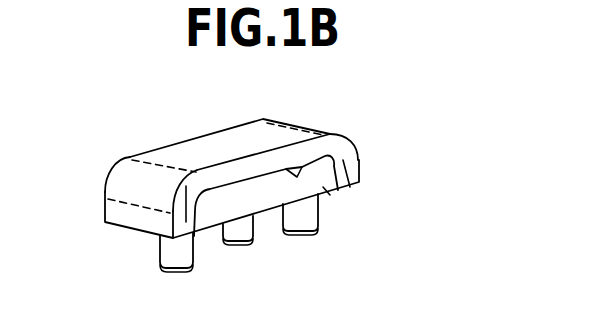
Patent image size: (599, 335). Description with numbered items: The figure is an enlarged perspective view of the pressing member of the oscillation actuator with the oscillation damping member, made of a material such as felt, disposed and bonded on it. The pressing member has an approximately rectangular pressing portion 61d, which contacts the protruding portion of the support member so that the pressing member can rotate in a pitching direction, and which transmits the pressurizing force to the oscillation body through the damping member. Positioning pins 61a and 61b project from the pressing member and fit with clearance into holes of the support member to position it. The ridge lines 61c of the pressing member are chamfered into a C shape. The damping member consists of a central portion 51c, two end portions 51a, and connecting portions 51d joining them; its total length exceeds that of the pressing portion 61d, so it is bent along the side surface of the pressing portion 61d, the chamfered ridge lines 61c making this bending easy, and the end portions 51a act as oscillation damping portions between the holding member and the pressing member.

The end portion 51a is at (160, 232).
The central portion 51c is at (237, 143).
The connecting portion 51d is at (127, 180).
The positioning pin 61a is at (176, 258).
The positioning pin 61b is at (239, 228).
The ridge line 61c is at (198, 190).
The pressing portion 61d is at (323, 187).